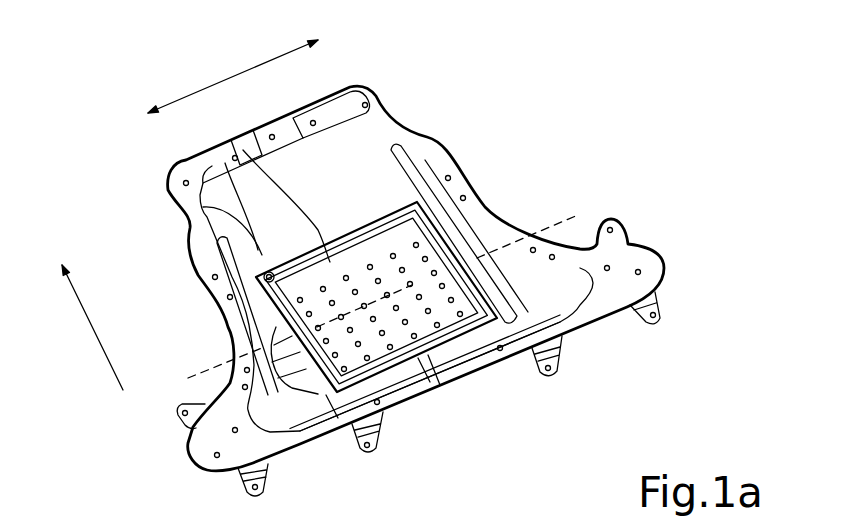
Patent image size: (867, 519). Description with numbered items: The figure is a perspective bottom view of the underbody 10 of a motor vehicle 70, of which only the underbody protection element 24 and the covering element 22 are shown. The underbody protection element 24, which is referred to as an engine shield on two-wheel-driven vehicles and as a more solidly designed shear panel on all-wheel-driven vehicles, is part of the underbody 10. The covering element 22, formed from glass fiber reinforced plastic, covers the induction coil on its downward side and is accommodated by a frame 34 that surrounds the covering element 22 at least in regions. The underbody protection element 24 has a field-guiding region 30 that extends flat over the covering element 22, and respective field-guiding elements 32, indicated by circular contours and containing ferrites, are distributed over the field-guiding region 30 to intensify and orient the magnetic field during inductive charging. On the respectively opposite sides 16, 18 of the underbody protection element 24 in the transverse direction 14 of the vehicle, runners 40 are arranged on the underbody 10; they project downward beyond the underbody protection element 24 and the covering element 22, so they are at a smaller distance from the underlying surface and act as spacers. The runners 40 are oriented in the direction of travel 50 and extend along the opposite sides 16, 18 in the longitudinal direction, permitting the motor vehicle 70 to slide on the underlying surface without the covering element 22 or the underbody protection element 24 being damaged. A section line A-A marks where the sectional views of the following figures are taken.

The underbody 10 is at (155, 410).
The transverse direction of the vehicle 14 is at (233, 76).
The side of the underbody protection element 16 is at (238, 312).
The side of the underbody protection element 18 is at (470, 223).
The covering element 22 is at (172, 200).
The underbody protection element 24 is at (370, 122).
The field-guiding region 30 is at (410, 265).
The field-guiding elements 32 is at (370, 270).
The frame 34 is at (447, 387).
The runners 40 is at (375, 448).
The direction of travel 50 is at (96, 336).
The motor vehicle 70 is at (675, 278).
The section line A- A is at (578, 215).